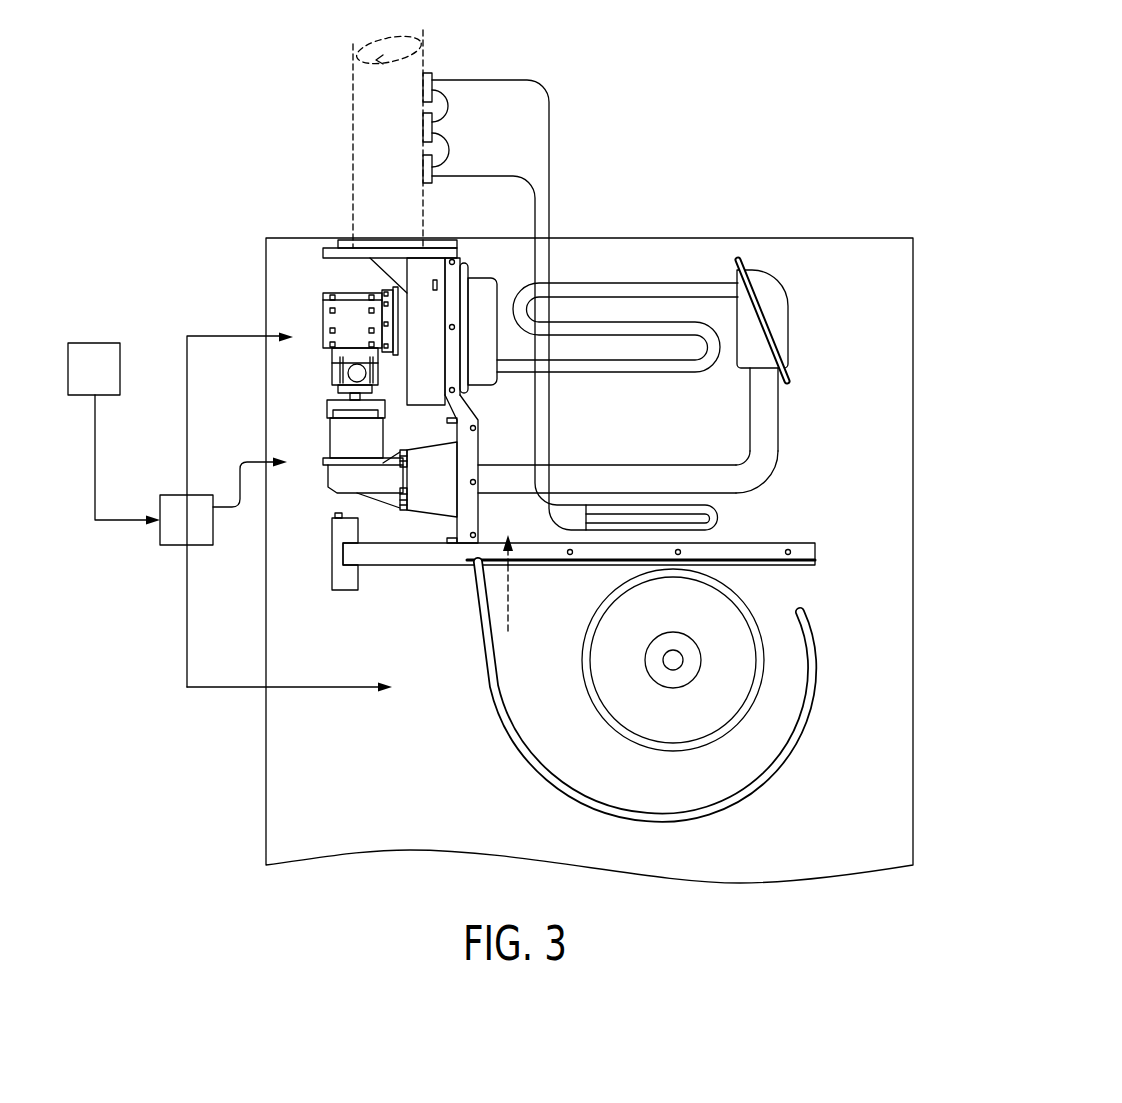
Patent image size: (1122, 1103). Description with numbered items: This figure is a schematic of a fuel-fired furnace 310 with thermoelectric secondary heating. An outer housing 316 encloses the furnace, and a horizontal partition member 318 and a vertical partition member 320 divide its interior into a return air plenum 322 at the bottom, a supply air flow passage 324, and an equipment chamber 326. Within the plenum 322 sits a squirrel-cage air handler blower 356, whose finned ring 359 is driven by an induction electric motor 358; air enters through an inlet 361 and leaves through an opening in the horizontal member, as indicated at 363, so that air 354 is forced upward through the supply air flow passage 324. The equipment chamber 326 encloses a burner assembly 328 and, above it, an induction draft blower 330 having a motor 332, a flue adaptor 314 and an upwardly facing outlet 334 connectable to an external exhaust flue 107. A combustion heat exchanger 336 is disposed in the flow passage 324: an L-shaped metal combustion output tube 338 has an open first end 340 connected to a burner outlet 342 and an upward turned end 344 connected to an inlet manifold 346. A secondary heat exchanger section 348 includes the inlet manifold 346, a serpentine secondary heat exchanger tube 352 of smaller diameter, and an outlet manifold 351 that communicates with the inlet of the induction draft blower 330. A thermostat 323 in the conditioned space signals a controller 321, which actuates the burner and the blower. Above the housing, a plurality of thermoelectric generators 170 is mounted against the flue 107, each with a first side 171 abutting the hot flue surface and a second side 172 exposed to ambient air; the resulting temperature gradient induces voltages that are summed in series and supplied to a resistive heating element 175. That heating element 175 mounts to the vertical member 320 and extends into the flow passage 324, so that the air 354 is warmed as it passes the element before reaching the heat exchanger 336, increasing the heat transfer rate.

The exhaust flue 107 is at (352, 143).
The thermoelectric generator 170 is at (425, 76).
The first side 171 is at (423, 88).
The second side 172 is at (433, 90).
The resistive heating element 175 is at (722, 530).
The fuel-fired furnace 310 is at (272, 214).
The flue adaptor 314 is at (388, 272).
The housing 316 is at (913, 477).
The horizontal partition member 318 is at (490, 570).
The vertical partition member 320 is at (467, 518).
The controller 321 is at (170, 547).
The return air plenum 322 is at (472, 687).
The thermostat 323 is at (91, 343).
The supply air flow passage 324 is at (732, 424).
The equipment chamber 326 is at (430, 424).
The burner assembly 328 is at (317, 388).
The induction draft blower 330 is at (317, 280).
The motor 332 is at (320, 350).
The upwardly facing outlet 334 is at (400, 235).
The combustion heat exchanger 336 is at (780, 480).
The L-shaped metal combustion output tube 338 is at (695, 483).
The open first end 340 is at (481, 497).
The burner outlet 342 is at (457, 498).
The upward turned end 344 is at (758, 375).
The inlet manifold 346 is at (778, 314).
The secondary heat exchanger section 348 is at (589, 268).
The outlet manifold 351 is at (481, 305).
The secondary heat exchanger tube 352 is at (663, 287).
The air 354 is at (650, 386).
The air handler blower 356 is at (752, 790).
The induction electric motor 358 is at (675, 656).
The finned ring 359 is at (765, 665).
The inlet 361 is at (805, 585).
The opening in horizontal member 363 is at (508, 618).